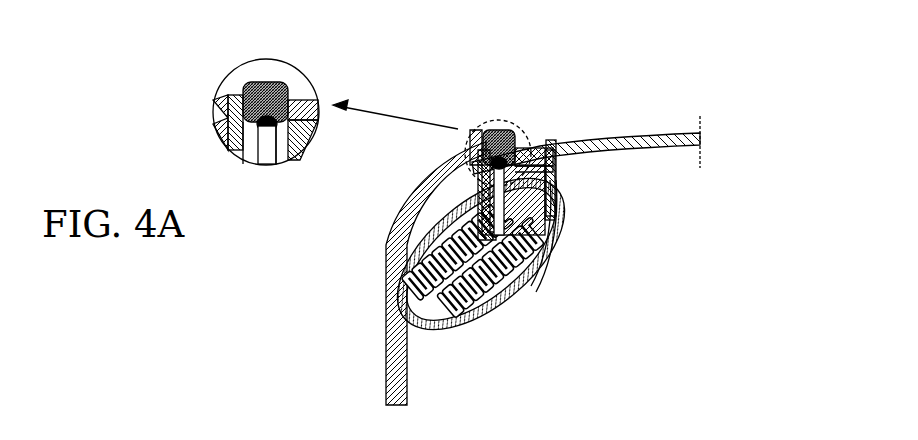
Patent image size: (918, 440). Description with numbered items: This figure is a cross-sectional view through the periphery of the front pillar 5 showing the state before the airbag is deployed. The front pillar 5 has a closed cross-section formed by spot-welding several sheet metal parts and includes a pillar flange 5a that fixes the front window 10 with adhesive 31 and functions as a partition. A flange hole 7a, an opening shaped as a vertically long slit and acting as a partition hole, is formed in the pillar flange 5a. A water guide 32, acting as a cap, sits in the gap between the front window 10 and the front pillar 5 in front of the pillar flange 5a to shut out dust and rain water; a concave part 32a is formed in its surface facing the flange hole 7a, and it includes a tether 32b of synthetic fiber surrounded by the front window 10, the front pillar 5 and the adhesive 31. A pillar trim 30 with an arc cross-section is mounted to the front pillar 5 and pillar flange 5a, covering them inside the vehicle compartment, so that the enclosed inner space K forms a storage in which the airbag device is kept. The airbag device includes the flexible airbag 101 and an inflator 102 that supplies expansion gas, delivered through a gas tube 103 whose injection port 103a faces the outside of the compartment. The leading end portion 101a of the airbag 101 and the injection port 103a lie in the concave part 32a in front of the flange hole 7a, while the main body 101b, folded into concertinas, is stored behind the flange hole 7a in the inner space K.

The front pillar 5 is at (394, 405).
The front window 10 is at (675, 146).
The pillar trim 30 is at (481, 268).
The inflator 102 is at (535, 282).
The inner space K is at (500, 286).
The water guide 32 is at (495, 130).
The concave part 32a is at (508, 132).
The tether 32b is at (549, 151).
The adhesive 31 is at (553, 166).
The pillar flange 5a is at (556, 183).
The flange hole 7a is at (560, 201).
The gas tube 103 is at (544, 234).
The injection port 103a is at (488, 148).
The airbag 101 is at (425, 153).
The leading end portion 101a is at (487, 184).
The main body 101b is at (480, 233).